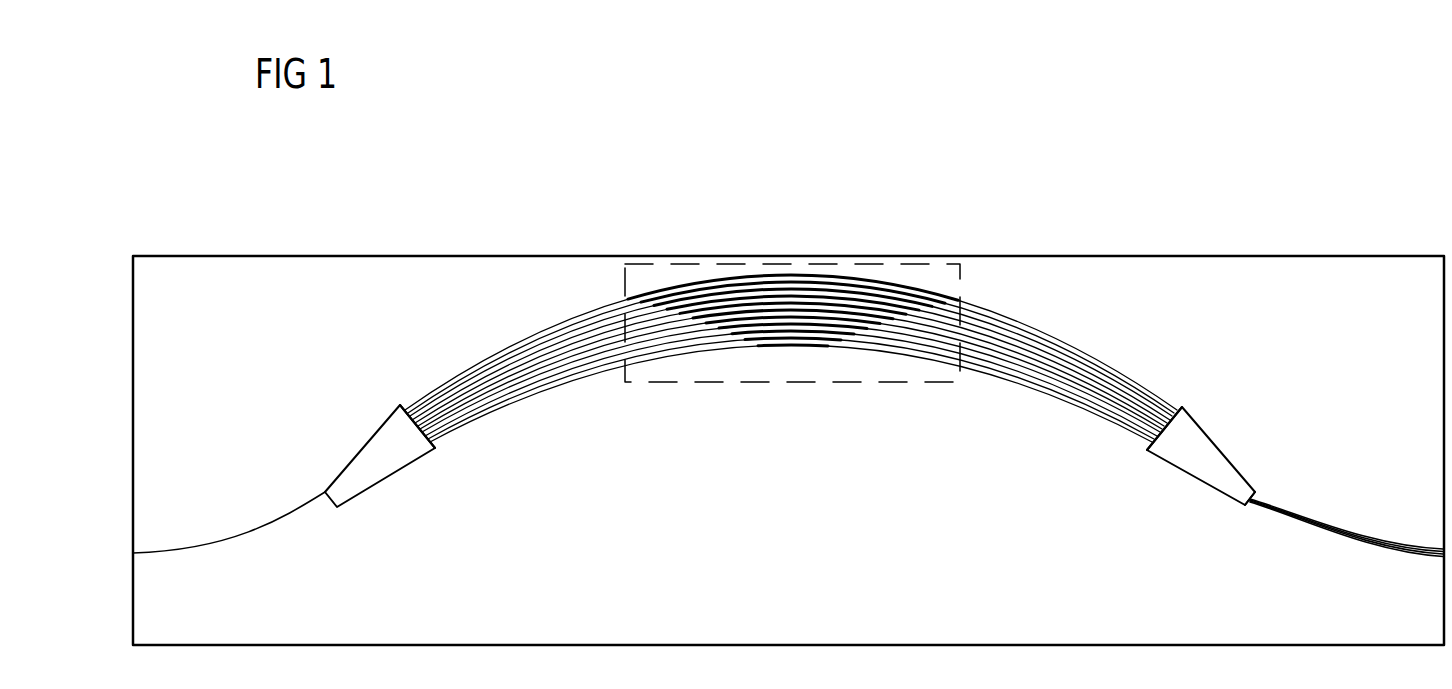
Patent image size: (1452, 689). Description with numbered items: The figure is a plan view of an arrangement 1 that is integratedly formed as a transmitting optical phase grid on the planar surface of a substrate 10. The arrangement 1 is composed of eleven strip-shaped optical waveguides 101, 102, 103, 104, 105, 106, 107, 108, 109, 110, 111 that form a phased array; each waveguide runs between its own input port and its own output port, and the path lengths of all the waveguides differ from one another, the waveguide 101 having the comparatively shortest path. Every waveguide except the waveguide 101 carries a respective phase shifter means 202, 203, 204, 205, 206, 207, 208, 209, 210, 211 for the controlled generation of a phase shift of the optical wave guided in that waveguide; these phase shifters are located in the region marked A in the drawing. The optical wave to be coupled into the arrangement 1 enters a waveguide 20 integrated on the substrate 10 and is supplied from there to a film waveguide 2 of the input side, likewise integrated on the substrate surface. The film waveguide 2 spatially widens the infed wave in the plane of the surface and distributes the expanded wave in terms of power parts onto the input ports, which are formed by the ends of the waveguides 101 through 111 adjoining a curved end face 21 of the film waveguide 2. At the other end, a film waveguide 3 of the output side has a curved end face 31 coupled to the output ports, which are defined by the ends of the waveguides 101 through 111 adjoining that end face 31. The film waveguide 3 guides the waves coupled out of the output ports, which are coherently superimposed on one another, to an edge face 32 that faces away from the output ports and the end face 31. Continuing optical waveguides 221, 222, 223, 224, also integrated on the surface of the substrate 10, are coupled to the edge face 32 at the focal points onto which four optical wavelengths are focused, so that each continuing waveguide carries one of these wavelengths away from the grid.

The arrangement 1 is at (902, 333).
The substrate 10 is at (788, 412).
The optical waveguide 101 is at (938, 326).
The optical waveguide 102 is at (791, 425).
The optical waveguide 103 is at (791, 400).
The optical waveguide 104 is at (791, 418).
The optical waveguide 105 is at (791, 398).
The optical waveguide 106 is at (791, 310).
The optical waveguide 107 is at (791, 289).
The optical waveguide 108 is at (791, 307).
The optical waveguide 109 is at (791, 289).
The optical waveguide 110 is at (791, 304).
The optical waveguide 111 is at (767, 302).
The film waveguide of the input side 2 is at (398, 479).
The waveguide 20 is at (229, 544).
The curved end face 21 is at (436, 467).
The film waveguide of the output side 3 is at (1209, 466).
The curved end face 31 is at (1172, 401).
The edge face 32 is at (1258, 536).
The continuing optical waveguide 221 is at (1347, 503).
The continuing optical waveguide 222 is at (1346, 519).
The continuing optical waveguide 223 is at (1346, 559).
The continuing optical waveguide 224 is at (1346, 574).
The phase shifter means 202 is at (744, 401).
The phase shifter means 203 is at (786, 391).
The phase shifter means 204 is at (834, 408).
The phase shifter means 205 is at (870, 388).
The phase shifter means 206 is at (899, 260).
The phase shifter means 207 is at (849, 255).
The phase shifter means 208 is at (806, 227).
The phase shifter means 209 is at (757, 245).
The phase shifter means 210 is at (719, 225).
The phase shifter means 211 is at (671, 238).
The coupling region A is at (792, 359).